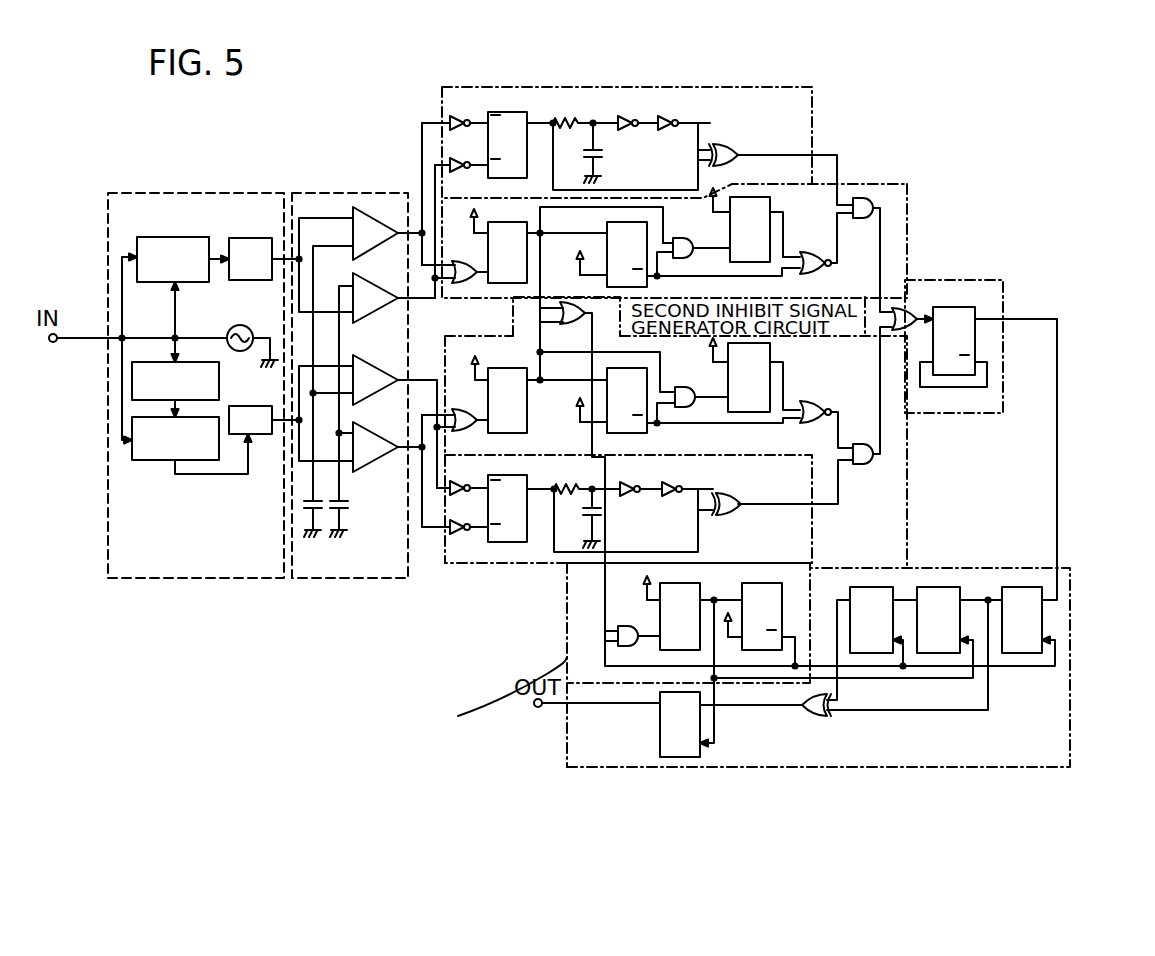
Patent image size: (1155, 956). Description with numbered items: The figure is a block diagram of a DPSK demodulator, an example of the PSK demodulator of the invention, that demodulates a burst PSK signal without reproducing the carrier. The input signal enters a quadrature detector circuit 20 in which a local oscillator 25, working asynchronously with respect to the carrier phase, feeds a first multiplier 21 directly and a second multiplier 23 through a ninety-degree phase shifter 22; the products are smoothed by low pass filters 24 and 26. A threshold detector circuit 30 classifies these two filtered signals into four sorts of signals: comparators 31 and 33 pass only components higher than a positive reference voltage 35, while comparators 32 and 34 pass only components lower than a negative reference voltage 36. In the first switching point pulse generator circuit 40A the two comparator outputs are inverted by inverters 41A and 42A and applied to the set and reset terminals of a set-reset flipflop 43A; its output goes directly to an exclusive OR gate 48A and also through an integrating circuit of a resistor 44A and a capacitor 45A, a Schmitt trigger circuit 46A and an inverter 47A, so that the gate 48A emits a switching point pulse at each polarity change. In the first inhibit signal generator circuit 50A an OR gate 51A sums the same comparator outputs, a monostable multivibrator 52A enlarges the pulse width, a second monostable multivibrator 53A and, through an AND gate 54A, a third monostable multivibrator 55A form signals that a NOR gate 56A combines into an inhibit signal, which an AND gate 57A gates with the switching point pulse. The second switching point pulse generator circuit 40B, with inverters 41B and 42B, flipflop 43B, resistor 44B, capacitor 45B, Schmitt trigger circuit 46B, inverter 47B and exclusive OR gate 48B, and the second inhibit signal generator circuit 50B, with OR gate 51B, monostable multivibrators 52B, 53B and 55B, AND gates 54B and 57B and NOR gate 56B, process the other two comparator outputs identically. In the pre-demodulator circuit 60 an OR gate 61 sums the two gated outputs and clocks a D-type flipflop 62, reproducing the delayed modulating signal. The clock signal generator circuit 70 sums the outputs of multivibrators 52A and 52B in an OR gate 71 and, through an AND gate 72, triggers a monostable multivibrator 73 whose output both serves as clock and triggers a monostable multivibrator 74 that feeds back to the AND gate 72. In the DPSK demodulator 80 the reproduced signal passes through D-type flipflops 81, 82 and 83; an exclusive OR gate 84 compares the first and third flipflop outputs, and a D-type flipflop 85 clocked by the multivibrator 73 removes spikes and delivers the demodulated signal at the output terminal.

The quadrature detector circuit 20 is at (150, 192).
The multiplier 21 is at (181, 237).
The 90° phase shifter 22 is at (218, 375).
The multiplier 23 is at (160, 460).
The low pass filter 24 is at (251, 238).
The local oscillator 25 is at (246, 319).
The low pass filter 26 is at (262, 434).
The threshold detector circuit 30 is at (295, 193).
The comparator 31 is at (368, 225).
The comparator 32 is at (368, 289).
The comparator 33 is at (366, 363).
The comparator 34 is at (368, 443).
The reference voltage source 35 is at (327, 505).
The reference voltage source 36 is at (346, 508).
The first switching point pulse generator circuit 40A is at (462, 71).
The inverter 41A is at (466, 112).
The inverter 42A is at (466, 158).
The set-reset type flipflop 43A is at (516, 113).
The resistor 44A is at (568, 123).
The capacitor 45A is at (602, 156).
The Schmitt trigger circuit 46A is at (630, 111).
The inverter 47A is at (678, 111).
The exclusive OR gate 48A is at (728, 143).
The first inhibit signal generator circuit 50A is at (866, 184).
The OR gate 51A is at (470, 259).
The monostable multivibrator 52A is at (488, 223).
The monostable multivibrator 53A is at (607, 235).
The AND gate 54A is at (690, 232).
The monostable multivibrator 55A is at (770, 201).
The NOR gate 56A is at (804, 257).
The AND gate 57A is at (858, 219).
The second switching point pulse generator circuit 40B is at (489, 563).
The inverter 41B is at (466, 481).
The inverter 42B is at (460, 537).
The set-reset type flipflop 43B is at (513, 485).
The resistor 44B is at (575, 485).
The capacitor 45B is at (586, 512).
The Schmitt trigger circuit 46B is at (626, 499).
The inverter 47B is at (665, 502).
The exclusive OR gate 48B is at (720, 497).
The second inhibit signal generator circuit 50B is at (475, 334).
The OR gate 51B is at (468, 407).
The monostable multivibrator 52B is at (527, 425).
The monostable multivibrator 53B is at (648, 431).
The AND gate 54B is at (735, 381).
The monostable multivibrator 55B is at (770, 351).
The NOR gate 56B is at (812, 405).
The AND gate 57B is at (857, 467).
The pre-demodulator circuit 60 is at (936, 280).
The OR gate 61 is at (910, 331).
The D-type flipflop 62 is at (950, 301).
The clock signal generator circuit 70 is at (513, 319).
The OR gate 71 is at (586, 313).
The AND gate 72 is at (613, 637).
The monostable multivibrator 73 is at (700, 583).
The monostable multivibrator 74 is at (762, 587).
The DPSK demodulator 80 is at (888, 568).
The D-type flipflop 81 is at (1008, 588).
The D-type flipflop 82 is at (925, 588).
The D-type flipflop 83 is at (851, 588).
The exclusive OR gate 84 is at (802, 719).
The D-type flipflop 85 is at (660, 747).